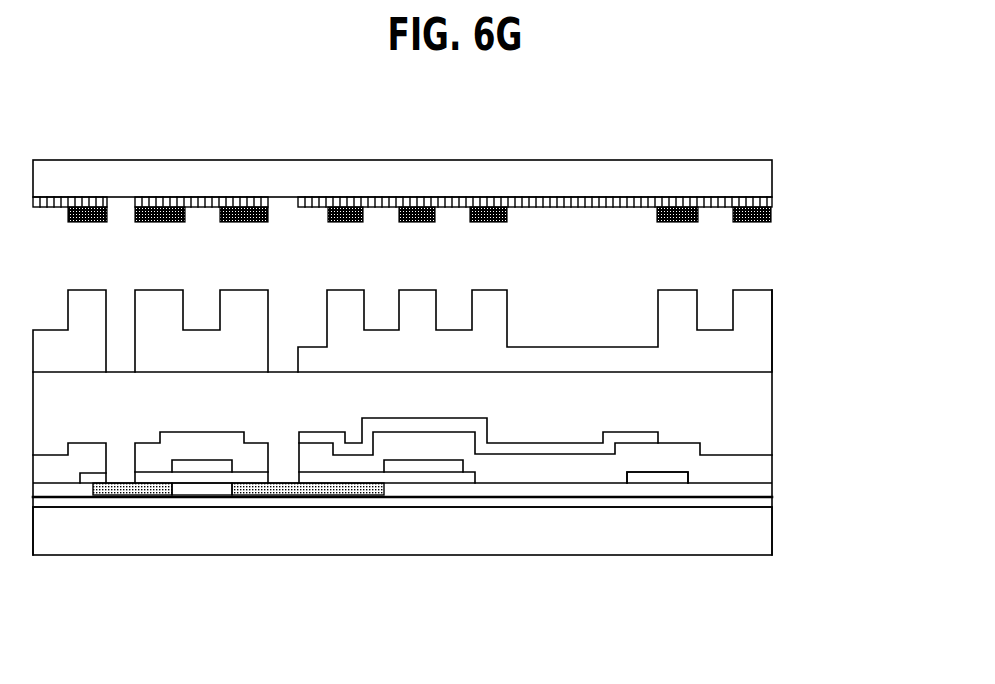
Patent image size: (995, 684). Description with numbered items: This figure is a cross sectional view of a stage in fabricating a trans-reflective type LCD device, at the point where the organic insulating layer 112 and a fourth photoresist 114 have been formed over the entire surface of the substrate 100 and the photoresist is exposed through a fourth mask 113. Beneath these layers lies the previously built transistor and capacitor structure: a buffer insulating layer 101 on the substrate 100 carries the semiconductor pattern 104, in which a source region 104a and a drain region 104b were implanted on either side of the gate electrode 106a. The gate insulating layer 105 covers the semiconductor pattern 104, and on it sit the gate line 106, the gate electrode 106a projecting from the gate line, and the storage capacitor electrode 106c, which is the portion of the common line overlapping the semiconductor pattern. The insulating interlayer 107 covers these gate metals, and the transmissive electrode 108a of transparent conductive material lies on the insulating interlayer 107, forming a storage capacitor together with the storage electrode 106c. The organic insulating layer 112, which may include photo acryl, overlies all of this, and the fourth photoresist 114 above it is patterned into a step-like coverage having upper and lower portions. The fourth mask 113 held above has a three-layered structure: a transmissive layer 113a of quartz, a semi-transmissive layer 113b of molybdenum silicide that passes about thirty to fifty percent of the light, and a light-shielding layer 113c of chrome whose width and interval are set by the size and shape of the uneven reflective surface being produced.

The substrate 100 is at (765, 533).
The buffer insulating layer 101 is at (765, 502).
The semiconductor pattern 104 is at (207, 493).
The source region 104a is at (138, 493).
The drain region 104b is at (273, 493).
The gate insulating layer 105 is at (492, 490).
The gate line 106 is at (658, 478).
The gate electrode 106a is at (197, 465).
The storage capacitor electrode 106c is at (417, 467).
The insulating interlayer 107 is at (313, 465).
The transmissive electrode 108a is at (577, 447).
The organic insulating layer 112 is at (765, 403).
The fourth mask 113 is at (443, 158).
The transmissive layer 113a is at (765, 170).
The semi-transmissive layer 113b is at (765, 200).
The light-shielding layer 113c is at (772, 217).
The fourth photoresist 114 is at (765, 347).